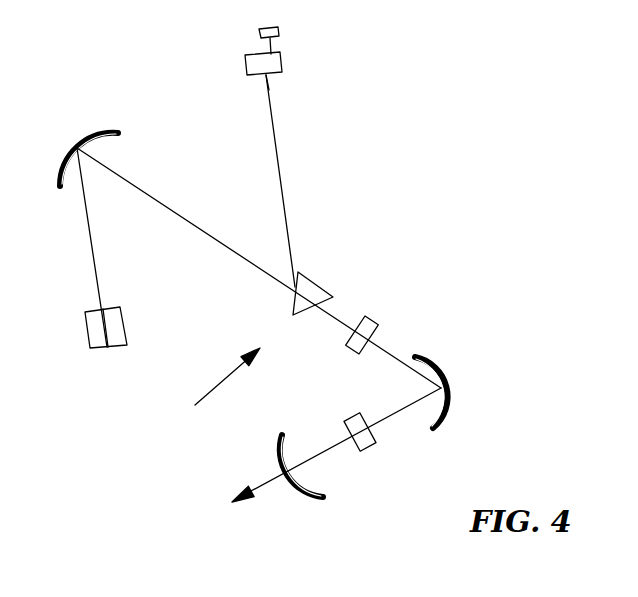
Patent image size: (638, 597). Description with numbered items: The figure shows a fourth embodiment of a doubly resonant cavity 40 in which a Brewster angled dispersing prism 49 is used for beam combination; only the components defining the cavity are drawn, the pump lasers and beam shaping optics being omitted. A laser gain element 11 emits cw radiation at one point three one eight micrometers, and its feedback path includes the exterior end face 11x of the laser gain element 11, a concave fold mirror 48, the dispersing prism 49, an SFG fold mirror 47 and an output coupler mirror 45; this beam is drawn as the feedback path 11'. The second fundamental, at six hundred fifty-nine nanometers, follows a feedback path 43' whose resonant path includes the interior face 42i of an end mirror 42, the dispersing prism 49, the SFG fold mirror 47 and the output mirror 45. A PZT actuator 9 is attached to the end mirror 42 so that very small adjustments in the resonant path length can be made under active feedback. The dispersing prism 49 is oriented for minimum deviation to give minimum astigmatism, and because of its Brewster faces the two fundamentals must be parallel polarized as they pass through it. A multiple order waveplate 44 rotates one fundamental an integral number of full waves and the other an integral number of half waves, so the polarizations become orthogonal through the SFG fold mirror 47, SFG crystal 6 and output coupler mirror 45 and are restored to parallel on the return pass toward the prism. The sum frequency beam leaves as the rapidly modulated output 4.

The output 4 is at (324, 458).
The SFG crystal 6 is at (368, 452).
The PZT actuator 9 is at (279, 32).
The laser gain element 11 is at (77, 329).
The 1.318 μm feedback path 11' is at (124, 247).
The end face 11x is at (113, 348).
The doubly resonant cavity 40 is at (208, 394).
The end mirror 42 is at (282, 60).
The interior face 42i is at (267, 78).
The feedback path 43' is at (316, 181).
The waveplate 44 is at (372, 318).
The output coupler mirror 45 is at (301, 500).
The SFG fold mirror 47 is at (451, 390).
The concave fold mirror 48 is at (68, 135).
The dispersing prism 49 is at (322, 278).